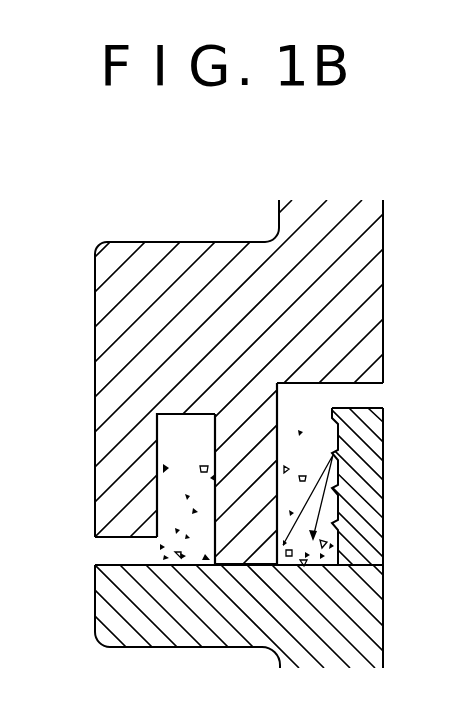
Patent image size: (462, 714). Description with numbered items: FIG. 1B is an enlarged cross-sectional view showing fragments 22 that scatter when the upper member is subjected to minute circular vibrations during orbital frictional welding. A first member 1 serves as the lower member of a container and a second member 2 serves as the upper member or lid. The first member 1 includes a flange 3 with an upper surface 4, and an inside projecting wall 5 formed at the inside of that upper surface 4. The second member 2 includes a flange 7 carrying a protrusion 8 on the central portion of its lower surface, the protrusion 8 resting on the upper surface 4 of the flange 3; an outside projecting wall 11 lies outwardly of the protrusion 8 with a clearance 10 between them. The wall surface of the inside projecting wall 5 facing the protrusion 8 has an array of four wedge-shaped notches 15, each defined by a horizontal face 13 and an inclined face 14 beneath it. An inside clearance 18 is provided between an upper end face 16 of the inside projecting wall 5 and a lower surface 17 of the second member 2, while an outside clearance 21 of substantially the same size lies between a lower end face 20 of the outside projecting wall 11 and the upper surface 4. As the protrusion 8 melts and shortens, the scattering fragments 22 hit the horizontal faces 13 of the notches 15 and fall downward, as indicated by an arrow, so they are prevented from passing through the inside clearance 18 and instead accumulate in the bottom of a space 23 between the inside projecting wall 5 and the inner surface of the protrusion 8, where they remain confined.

The first member 1 is at (232, 637).
The second member 2 is at (234, 448).
The flange 3 is at (185, 632).
The upper surface 4 is at (100, 561).
The inside projecting wall 5 is at (368, 472).
The flange 7 is at (203, 267).
The protrusion 8 is at (247, 540).
The clearance 10 is at (185, 437).
The outside projecting wall 11 is at (130, 475).
The horizontal face 13 is at (338, 421).
The inclined face 14 is at (378, 466).
The wedge-shaped notches 15 is at (333, 425).
The upper end face 16 is at (370, 407).
The lower surface 17 is at (363, 385).
The inside clearance 18 is at (389, 395).
The lower end face 20 is at (100, 541).
The outside clearance 21 is at (91, 549).
The fragments 22 is at (178, 562).
The space 23 is at (352, 345).